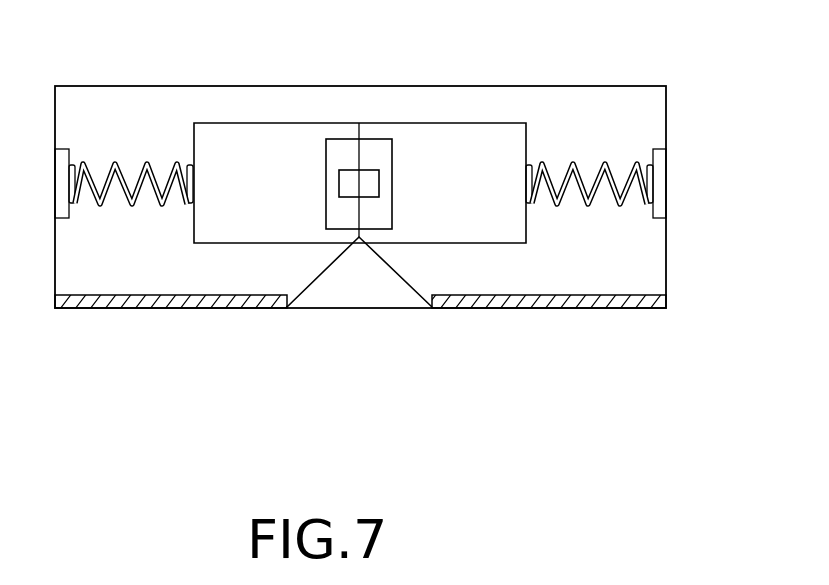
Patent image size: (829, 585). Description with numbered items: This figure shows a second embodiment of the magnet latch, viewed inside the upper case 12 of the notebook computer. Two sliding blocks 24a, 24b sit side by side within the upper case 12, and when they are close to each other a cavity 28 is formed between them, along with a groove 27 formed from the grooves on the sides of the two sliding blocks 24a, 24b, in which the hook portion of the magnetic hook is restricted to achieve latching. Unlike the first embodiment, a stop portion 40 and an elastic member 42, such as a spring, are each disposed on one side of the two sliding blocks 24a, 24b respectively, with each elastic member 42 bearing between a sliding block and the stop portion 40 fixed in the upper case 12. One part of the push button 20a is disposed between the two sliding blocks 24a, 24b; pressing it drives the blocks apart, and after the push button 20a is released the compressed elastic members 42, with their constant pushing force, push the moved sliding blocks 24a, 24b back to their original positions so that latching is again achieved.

The upper case 12 is at (666, 260).
The stop portion 40 is at (660, 163).
The elastic member 42 is at (567, 167).
The sliding block 24a is at (477, 227).
The sliding block 24b is at (257, 223).
The groove 27 is at (348, 150).
The cavity 28 is at (368, 185).
The push button 20a is at (362, 290).